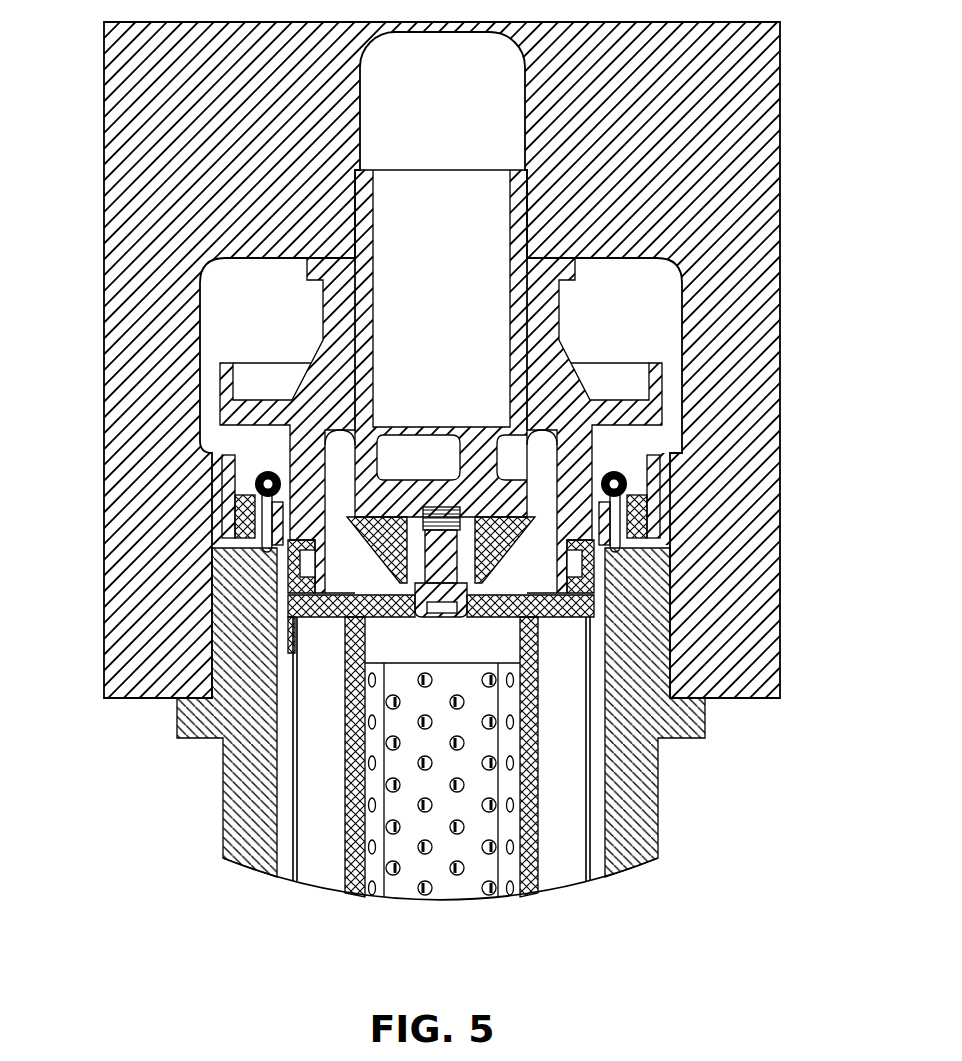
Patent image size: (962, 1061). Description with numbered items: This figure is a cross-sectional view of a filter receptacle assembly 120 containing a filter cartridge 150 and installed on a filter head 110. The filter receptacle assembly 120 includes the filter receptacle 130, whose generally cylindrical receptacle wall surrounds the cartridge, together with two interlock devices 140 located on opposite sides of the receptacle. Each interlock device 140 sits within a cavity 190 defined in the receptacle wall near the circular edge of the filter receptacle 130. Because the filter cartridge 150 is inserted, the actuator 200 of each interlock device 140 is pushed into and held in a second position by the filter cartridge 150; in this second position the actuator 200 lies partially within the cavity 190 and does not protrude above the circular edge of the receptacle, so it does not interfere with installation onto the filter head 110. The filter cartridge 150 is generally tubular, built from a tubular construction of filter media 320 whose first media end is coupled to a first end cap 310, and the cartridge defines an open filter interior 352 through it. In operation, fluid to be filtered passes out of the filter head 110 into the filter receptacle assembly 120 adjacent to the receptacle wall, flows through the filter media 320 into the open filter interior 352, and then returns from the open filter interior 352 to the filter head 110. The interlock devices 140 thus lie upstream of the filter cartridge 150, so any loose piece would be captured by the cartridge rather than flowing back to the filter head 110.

The filter head 110 is at (782, 158).
The filter receptacle assembly 120 is at (660, 803).
The filter receptacle 130 is at (210, 787).
The interlock device 140 is at (255, 487).
The filter cartridge 150 is at (316, 903).
The cavity 190 is at (253, 527).
The actuator 200 is at (263, 546).
The first end cap 310 is at (567, 622).
The filter media 320 is at (565, 865).
The open filter interior 352 is at (441, 890).